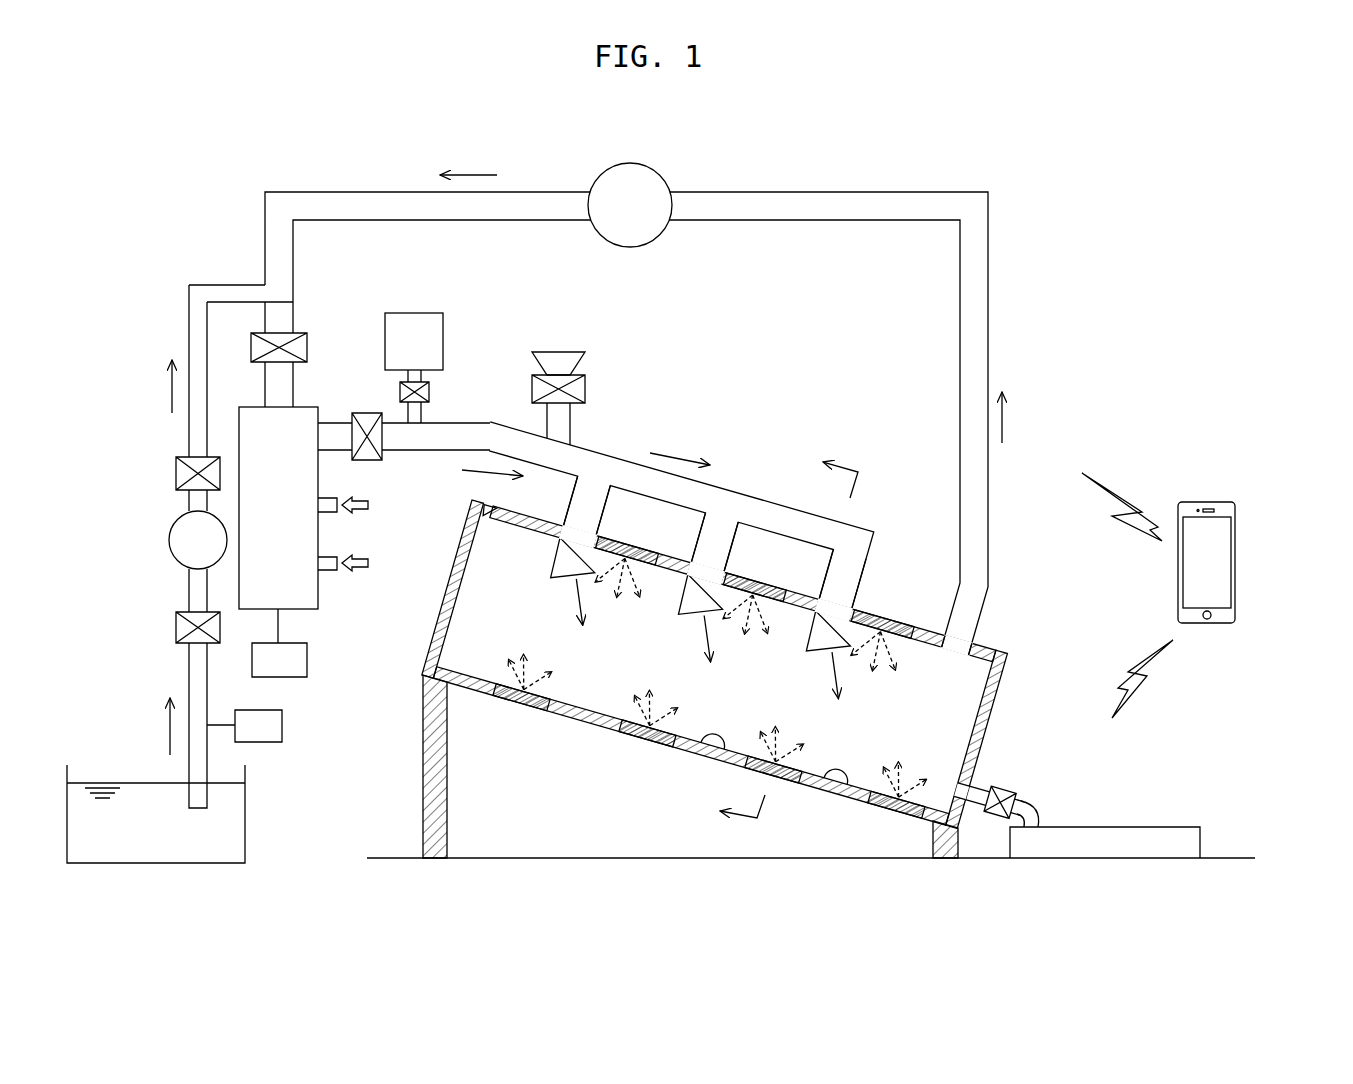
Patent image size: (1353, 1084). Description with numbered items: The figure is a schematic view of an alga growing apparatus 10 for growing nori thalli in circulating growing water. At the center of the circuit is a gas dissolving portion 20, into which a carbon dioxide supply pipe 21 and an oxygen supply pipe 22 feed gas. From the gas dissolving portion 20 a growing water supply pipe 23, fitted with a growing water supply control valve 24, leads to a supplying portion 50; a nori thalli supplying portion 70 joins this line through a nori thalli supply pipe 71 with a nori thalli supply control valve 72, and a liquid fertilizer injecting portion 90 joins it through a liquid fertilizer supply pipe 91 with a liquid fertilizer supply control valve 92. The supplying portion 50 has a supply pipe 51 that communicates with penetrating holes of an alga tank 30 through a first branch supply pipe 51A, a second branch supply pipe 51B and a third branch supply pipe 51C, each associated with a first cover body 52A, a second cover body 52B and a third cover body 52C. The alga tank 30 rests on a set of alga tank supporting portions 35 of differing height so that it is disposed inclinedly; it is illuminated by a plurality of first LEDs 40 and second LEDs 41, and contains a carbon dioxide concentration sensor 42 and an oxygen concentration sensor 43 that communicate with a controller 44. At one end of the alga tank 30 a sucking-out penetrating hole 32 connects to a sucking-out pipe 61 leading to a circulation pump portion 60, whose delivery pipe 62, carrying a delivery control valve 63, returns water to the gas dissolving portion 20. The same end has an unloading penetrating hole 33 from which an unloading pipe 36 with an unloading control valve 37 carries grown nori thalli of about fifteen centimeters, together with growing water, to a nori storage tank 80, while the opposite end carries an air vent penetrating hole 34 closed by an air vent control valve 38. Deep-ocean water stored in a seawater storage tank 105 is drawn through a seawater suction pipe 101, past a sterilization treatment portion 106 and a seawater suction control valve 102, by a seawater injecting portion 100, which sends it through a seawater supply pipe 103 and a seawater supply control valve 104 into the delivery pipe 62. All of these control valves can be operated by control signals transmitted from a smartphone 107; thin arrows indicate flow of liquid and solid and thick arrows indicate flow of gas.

The alga growing apparatus 10 is at (1127, 178).
The gas dissolving portion 20 is at (263, 515).
The carbon dioxide supply pipe 21 is at (335, 498).
The oxygen supply pipe 22 is at (330, 572).
The growing water supply pipe 23 is at (490, 420).
The growing water supply control valve 24 is at (360, 413).
The alga tank 30 is at (1010, 665).
The sucking-out penetrating hole 32 is at (943, 637).
The unloading penetrating hole 33 is at (972, 785).
The air vent penetrating hole 34 is at (507, 523).
The alga tank supporting portions 35 is at (448, 815).
The unloading pipe 36 is at (1037, 812).
The unloading control valve 37 is at (986, 858).
The air vent control valve 38 is at (486, 510).
The first LEDs 40 is at (628, 550).
The second LEDs 41 is at (521, 710).
The carbon dioxide concentration sensor 42 is at (705, 756).
The oxygen concentration sensor 43 is at (832, 795).
The controller 44 is at (308, 663).
The supplying portion 50 is at (738, 383).
The supply pipe 51 is at (737, 500).
The first branch supply pipe 51A is at (860, 560).
The second branch supply pipe 51B is at (692, 525).
The third branch supply pipe 51C is at (568, 505).
The first cover body 52A is at (806, 652).
The second cover body 52B is at (679, 614).
The third cover body 52C is at (553, 577).
The circulation pump portion 60 is at (614, 220).
The sucking-out pipe 61 is at (989, 235).
The delivery pipe 62 is at (346, 191).
The delivery control valve 63 is at (306, 345).
The nori thalli supplying portion 70 is at (570, 352).
The nori thalli supply pipe 71 is at (571, 412).
The nori thalli supply control valve 72 is at (586, 386).
The nori storage tank 80 is at (1195, 827).
The liquid fertilizer injecting portion 90 is at (399, 355).
The liquid fertilizer supply pipe 91 is at (426, 417).
The liquid fertilizer supply control valve 92 is at (430, 388).
The seawater injecting portion 100 is at (178, 555).
The seawater suction pipe 101 is at (190, 663).
The seawater suction control valve 102 is at (177, 625).
The seawater supply pipe 103 is at (189, 300).
The seawater supply control valve 104 is at (177, 473).
The seawater storage tank 105 is at (158, 863).
The sterilization treatment portion 106 is at (283, 727).
The smartphone 107 is at (1236, 543).